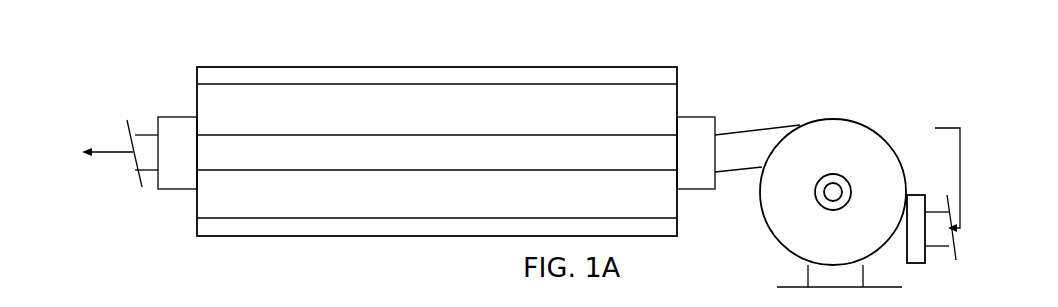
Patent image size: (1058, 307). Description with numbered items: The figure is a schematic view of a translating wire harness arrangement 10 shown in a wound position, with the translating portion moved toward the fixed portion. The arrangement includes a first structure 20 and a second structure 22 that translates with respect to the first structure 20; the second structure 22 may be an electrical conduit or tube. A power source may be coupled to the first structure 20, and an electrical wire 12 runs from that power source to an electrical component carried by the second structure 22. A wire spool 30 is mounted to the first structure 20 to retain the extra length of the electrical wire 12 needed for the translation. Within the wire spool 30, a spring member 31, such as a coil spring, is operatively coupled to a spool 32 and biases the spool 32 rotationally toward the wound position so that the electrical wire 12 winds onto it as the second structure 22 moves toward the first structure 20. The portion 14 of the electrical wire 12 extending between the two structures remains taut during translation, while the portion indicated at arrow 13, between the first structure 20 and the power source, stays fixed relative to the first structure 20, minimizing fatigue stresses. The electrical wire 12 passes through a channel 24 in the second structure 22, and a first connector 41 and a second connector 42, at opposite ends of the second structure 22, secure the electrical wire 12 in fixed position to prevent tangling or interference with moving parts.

The translating wire harness arrangement 10 is at (824, 45).
The electrical wire 12 is at (148, 135).
The arrow 13 is at (937, 252).
The portion of the electrical wire 14 is at (739, 176).
The first structure 20 is at (787, 287).
The second structure 22 is at (343, 68).
The channel 24 is at (507, 113).
The wire spool 30 is at (861, 130).
The spring member 31 is at (830, 201).
The spool 32 is at (841, 205).
The first connector 41 is at (705, 120).
The second connector 42 is at (180, 120).